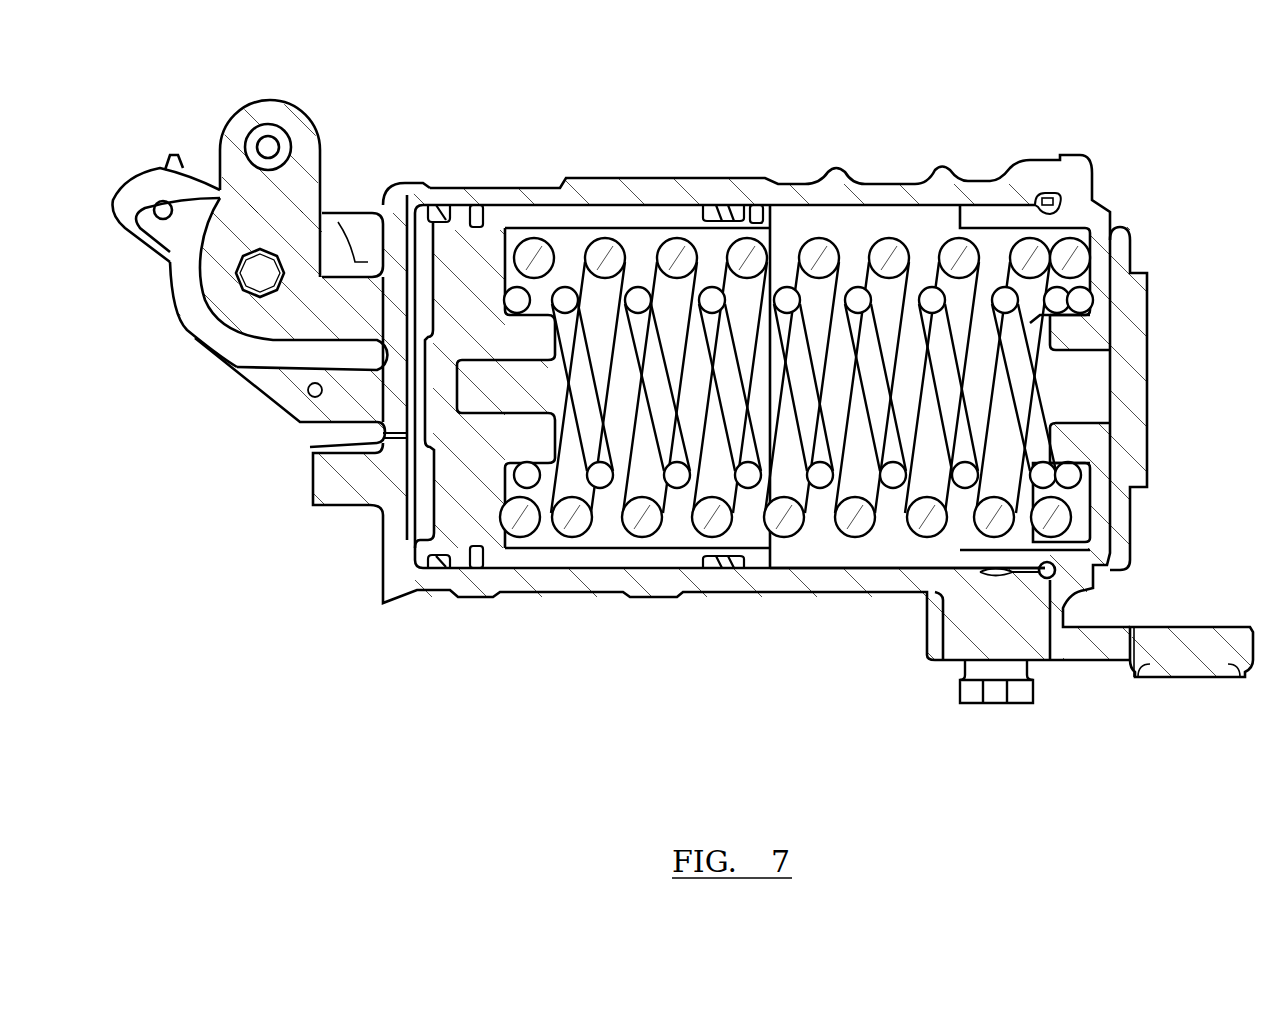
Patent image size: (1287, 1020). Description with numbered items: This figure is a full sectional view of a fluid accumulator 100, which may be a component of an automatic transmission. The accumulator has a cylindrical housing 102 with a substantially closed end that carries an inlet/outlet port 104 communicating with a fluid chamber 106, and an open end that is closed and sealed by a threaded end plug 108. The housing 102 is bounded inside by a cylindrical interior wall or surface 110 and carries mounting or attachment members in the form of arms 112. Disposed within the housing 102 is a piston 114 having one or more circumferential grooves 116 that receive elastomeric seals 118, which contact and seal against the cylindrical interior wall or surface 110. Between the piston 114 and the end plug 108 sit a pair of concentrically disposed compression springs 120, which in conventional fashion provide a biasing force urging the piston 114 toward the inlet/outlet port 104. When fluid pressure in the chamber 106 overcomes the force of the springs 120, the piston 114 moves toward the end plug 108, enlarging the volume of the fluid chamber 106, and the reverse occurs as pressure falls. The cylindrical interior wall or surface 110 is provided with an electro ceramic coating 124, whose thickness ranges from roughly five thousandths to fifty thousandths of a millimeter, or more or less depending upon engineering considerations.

The fluid accumulator 100 is at (1198, 110).
The cylindrical housing 102 is at (888, 192).
The inlet/outlet port 104 is at (380, 435).
The fluid chamber 106 is at (420, 518).
The threaded end plug 108 is at (1100, 257).
The cylindrical interior wall or surface 110 is at (900, 560).
The arms 112 is at (215, 276).
The piston 114 is at (462, 267).
The circumferential grooves 116 is at (488, 218).
The elastomeric seals 118 is at (477, 218).
The compression springs 120 is at (960, 318).
The electro ceramic coating 124 is at (825, 550).